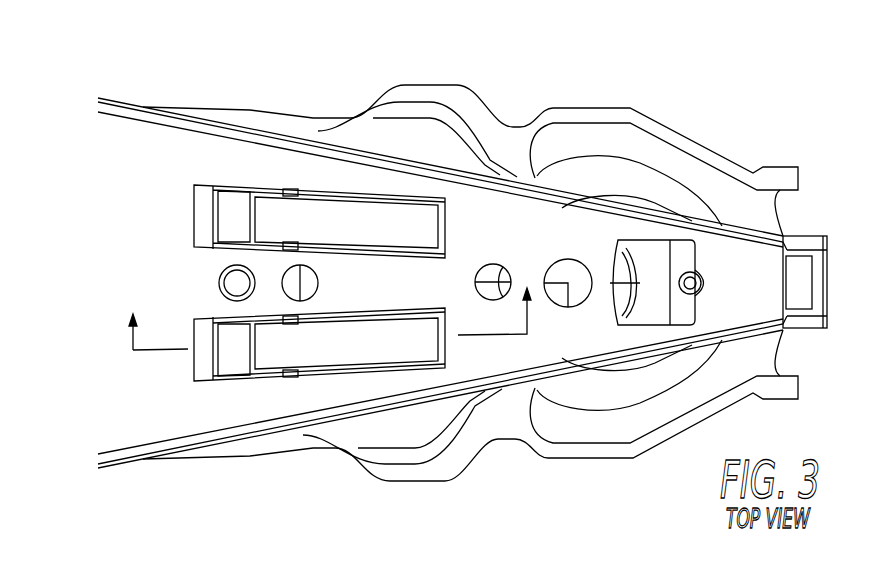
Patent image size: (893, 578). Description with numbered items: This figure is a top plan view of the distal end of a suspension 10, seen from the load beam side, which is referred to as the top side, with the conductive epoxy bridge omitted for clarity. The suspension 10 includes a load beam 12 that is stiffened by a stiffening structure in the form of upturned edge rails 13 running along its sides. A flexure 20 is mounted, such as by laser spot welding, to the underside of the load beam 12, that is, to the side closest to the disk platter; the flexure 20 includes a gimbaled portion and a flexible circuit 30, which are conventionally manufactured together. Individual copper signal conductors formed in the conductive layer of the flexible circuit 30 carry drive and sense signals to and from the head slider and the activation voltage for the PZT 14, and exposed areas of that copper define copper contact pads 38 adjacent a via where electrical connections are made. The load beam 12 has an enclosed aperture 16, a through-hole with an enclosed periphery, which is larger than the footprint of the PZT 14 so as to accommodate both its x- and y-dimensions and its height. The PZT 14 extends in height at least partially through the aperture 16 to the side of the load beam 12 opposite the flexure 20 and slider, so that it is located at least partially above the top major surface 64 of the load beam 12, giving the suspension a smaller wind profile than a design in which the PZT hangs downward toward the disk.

The suspension 10 is at (446, 272).
The load beam 12 is at (128, 164).
The upturned edge rails 13 is at (126, 102).
The PZT 14 is at (358, 228).
The aperture 16 is at (362, 157).
The flexure 20 is at (567, 471).
The flexible circuit 30 is at (432, 118).
The copper contact pads 38 is at (237, 207).
The top major surface 64 is at (207, 415).